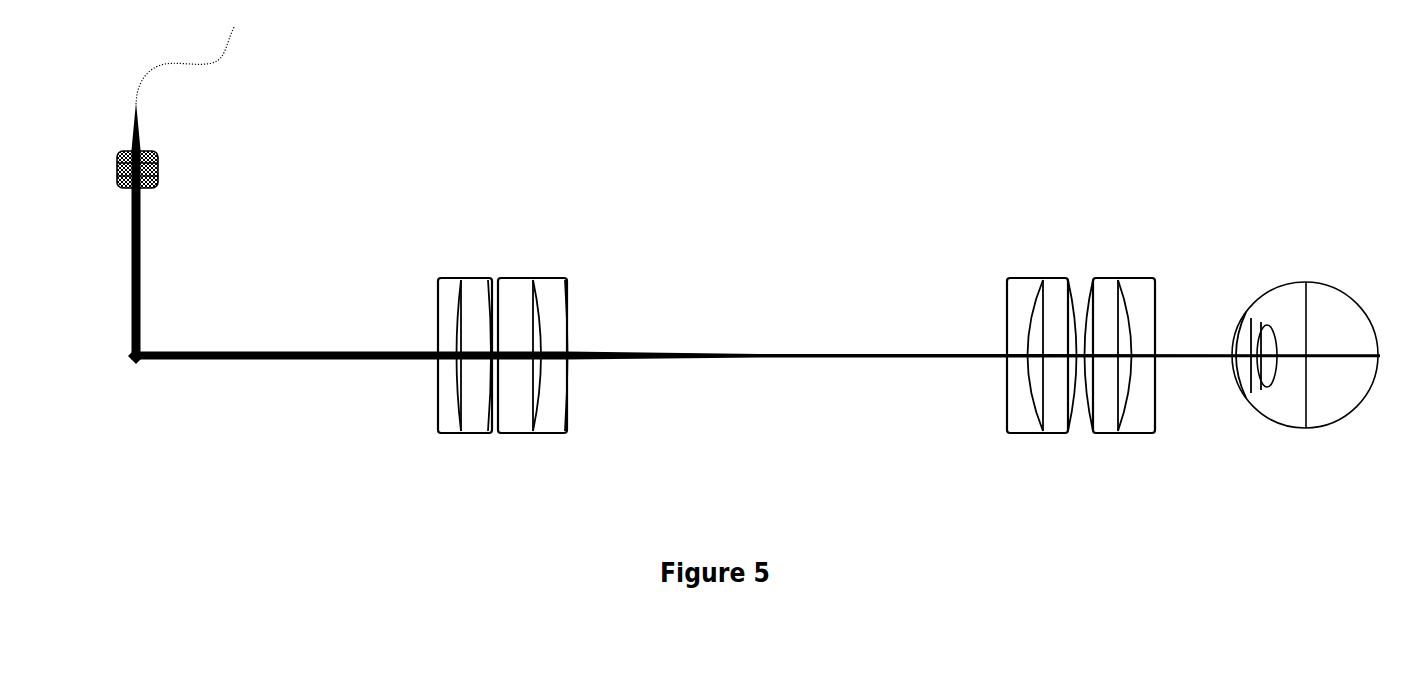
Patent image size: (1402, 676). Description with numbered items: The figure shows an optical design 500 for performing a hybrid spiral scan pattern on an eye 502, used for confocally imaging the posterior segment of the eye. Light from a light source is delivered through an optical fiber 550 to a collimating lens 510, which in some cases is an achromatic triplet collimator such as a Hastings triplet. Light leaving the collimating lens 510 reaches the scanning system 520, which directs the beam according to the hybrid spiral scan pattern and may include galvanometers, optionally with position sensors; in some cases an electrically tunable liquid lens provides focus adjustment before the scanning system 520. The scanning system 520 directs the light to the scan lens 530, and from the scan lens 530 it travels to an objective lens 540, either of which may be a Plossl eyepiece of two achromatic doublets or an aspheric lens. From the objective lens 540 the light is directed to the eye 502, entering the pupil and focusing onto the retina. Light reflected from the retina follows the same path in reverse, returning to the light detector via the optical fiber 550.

The optical design 500 is at (82, 206).
The eye 502 is at (1293, 241).
The collimating lens 510 is at (193, 170).
The scanning system 520 is at (165, 335).
The scan lens 530 is at (500, 236).
The objective lens 540 is at (1087, 224).
The optical fiber 550 is at (248, 42).